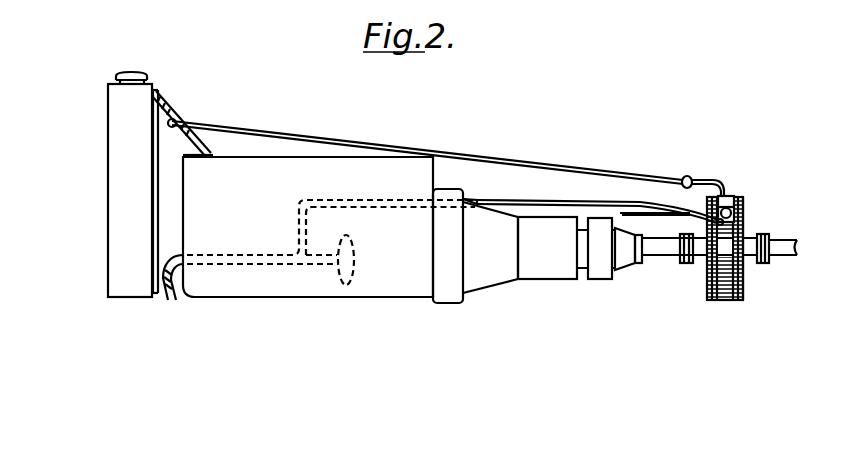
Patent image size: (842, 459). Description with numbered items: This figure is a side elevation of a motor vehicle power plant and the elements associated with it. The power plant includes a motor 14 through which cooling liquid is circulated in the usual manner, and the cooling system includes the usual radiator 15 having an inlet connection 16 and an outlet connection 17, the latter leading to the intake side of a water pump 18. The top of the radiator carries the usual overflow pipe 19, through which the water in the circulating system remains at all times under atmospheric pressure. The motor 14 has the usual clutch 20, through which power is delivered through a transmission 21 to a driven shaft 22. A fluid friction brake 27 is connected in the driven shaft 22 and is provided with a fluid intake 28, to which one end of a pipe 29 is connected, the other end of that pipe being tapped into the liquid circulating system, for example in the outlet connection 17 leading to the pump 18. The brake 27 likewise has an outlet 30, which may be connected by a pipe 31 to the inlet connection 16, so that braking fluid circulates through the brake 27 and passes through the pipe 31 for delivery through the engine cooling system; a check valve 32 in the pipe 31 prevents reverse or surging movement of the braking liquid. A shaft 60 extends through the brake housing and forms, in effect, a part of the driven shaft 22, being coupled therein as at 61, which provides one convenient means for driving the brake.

The motor 14 is at (296, 172).
The radiator 15 is at (110, 157).
The inlet connection 16 is at (165, 113).
The outlet connection 17 is at (236, 253).
The water pump 18 is at (357, 268).
The overflow pipe 19 is at (172, 300).
The clutch 20 is at (451, 294).
The transmission 21 is at (558, 268).
The driven shaft 22 is at (664, 256).
The fluid friction brake 27 is at (716, 293).
The fluid intake 28 is at (746, 231).
The pipe 29 is at (592, 201).
The outlet 30 is at (732, 190).
The pipe 31 is at (568, 167).
The check valve 32 is at (690, 177).
The shaft 60 is at (748, 257).
The coupling 61 is at (688, 233).